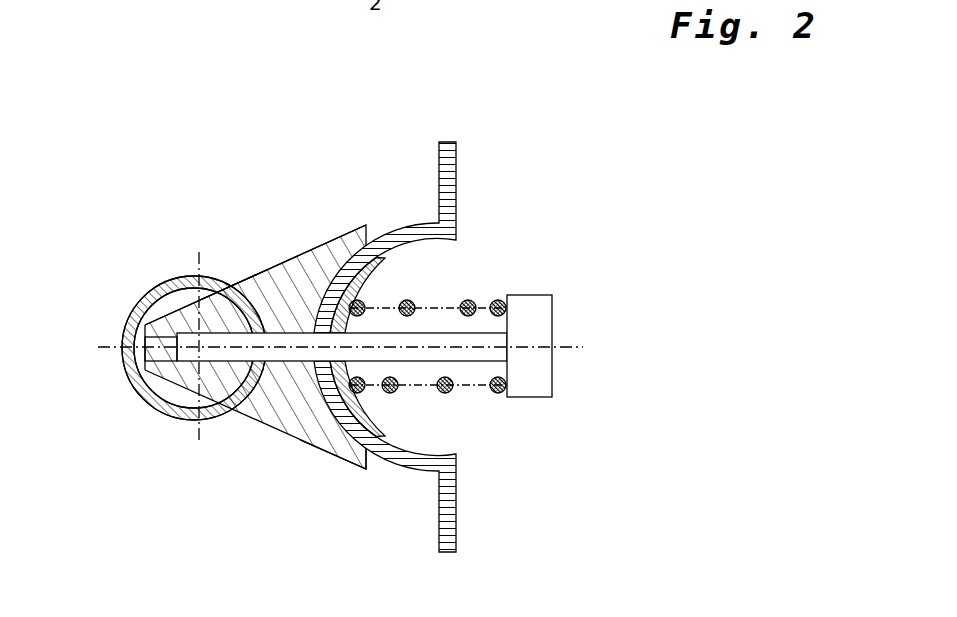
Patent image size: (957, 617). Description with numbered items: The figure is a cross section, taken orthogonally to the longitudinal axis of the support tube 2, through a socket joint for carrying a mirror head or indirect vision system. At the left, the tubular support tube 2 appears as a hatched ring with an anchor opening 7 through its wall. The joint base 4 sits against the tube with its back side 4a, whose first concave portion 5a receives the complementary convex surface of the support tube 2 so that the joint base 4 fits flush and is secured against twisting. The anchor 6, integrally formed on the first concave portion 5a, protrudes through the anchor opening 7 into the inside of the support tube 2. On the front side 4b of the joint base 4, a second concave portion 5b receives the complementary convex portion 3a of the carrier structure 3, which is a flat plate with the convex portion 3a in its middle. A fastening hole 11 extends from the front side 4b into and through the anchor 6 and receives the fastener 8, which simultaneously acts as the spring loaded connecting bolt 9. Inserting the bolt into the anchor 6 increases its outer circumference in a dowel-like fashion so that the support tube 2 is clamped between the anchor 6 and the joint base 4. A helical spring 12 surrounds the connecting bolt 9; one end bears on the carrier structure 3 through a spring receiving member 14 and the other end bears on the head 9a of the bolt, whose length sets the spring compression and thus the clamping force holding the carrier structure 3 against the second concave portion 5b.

The support tube 2 is at (168, 412).
The carrier structure 3 is at (458, 530).
The convex portion 3a is at (382, 448).
The joint base 4 is at (303, 433).
The back side 4a is at (235, 278).
The front side 4b is at (367, 468).
The first concave portion 5a is at (231, 286).
The second concave portion 5b is at (343, 237).
The anchor 6 is at (145, 297).
The anchor opening 7 is at (172, 363).
The fastener 8 is at (481, 306).
The spring loaded connecting bolt 9 is at (455, 340).
The head 9a is at (540, 325).
The fastening hole 11 is at (132, 347).
The helical spring 12 is at (418, 303).
The spring receiving member 14 is at (377, 423).